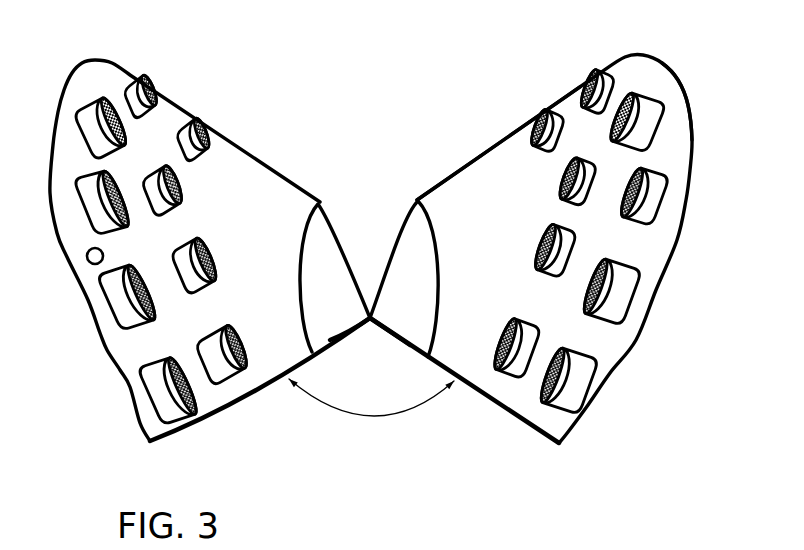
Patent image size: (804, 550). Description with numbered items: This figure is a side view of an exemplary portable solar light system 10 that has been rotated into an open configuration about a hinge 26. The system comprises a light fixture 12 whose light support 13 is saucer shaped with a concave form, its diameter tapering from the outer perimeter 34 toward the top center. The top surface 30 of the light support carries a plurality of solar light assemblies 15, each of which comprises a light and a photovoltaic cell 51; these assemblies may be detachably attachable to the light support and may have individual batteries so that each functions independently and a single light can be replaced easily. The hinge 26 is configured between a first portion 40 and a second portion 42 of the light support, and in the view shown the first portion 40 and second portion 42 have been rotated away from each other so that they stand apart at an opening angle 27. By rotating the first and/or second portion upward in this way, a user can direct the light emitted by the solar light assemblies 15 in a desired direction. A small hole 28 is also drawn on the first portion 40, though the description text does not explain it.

The portable solar light system 10 is at (270, 168).
The light fixture 12 is at (533, 172).
The light support 13 is at (472, 210).
The solar light assemblies 15 is at (620, 284).
The hinge 26 is at (368, 318).
The opening angle 27 is at (360, 418).
The aperture 28 is at (88, 257).
The top surface 30 is at (510, 187).
The outer perimeter 34 is at (693, 123).
The first portion 40 is at (72, 150).
The second portion 42 is at (657, 90).
The photovoltaic cell 51 is at (650, 183).